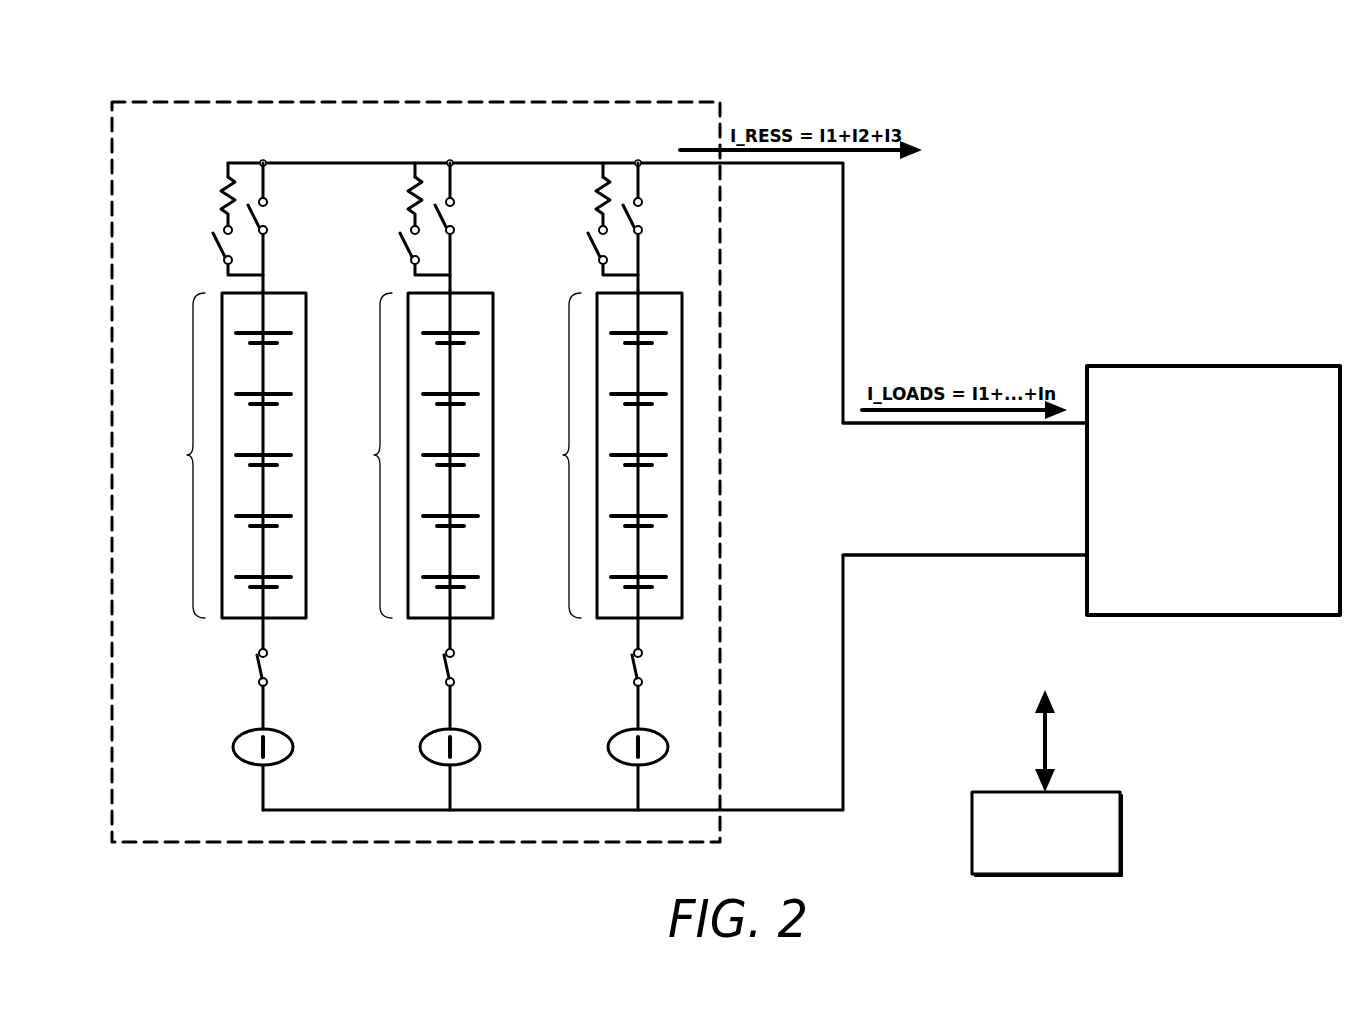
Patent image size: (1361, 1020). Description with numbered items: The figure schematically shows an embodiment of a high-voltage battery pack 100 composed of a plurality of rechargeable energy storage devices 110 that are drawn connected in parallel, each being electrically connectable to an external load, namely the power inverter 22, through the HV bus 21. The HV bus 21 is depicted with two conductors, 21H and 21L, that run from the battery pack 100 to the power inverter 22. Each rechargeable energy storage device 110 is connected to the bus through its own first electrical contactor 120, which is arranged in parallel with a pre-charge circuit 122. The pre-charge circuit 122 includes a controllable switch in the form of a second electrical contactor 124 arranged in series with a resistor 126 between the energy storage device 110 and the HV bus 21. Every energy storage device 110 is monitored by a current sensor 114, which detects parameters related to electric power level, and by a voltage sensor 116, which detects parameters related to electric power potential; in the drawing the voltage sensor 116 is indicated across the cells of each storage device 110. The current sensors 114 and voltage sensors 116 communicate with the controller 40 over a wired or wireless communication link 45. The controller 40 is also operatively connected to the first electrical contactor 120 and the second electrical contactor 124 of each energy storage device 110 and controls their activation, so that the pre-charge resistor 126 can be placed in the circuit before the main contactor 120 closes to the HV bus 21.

The HV battery pack 100 is at (141, 92).
The rechargeable energy storage device 110 is at (402, 469).
The current sensor 114 is at (241, 735).
The voltage sensor 116 is at (182, 470).
The first electrical contactor 120 is at (255, 217).
The pre-charge circuit 122 is at (379, 205).
The second electrical contactor 124 is at (220, 248).
The resistor 126 is at (222, 200).
The HV bus 21 is at (965, 489).
The HV bus high-side rail 21H is at (1067, 425).
The HV bus low-side rail 21L is at (1067, 553).
The power inverter 22 is at (1228, 505).
The controller 40 is at (1060, 848).
The communication link 45 is at (1043, 748).